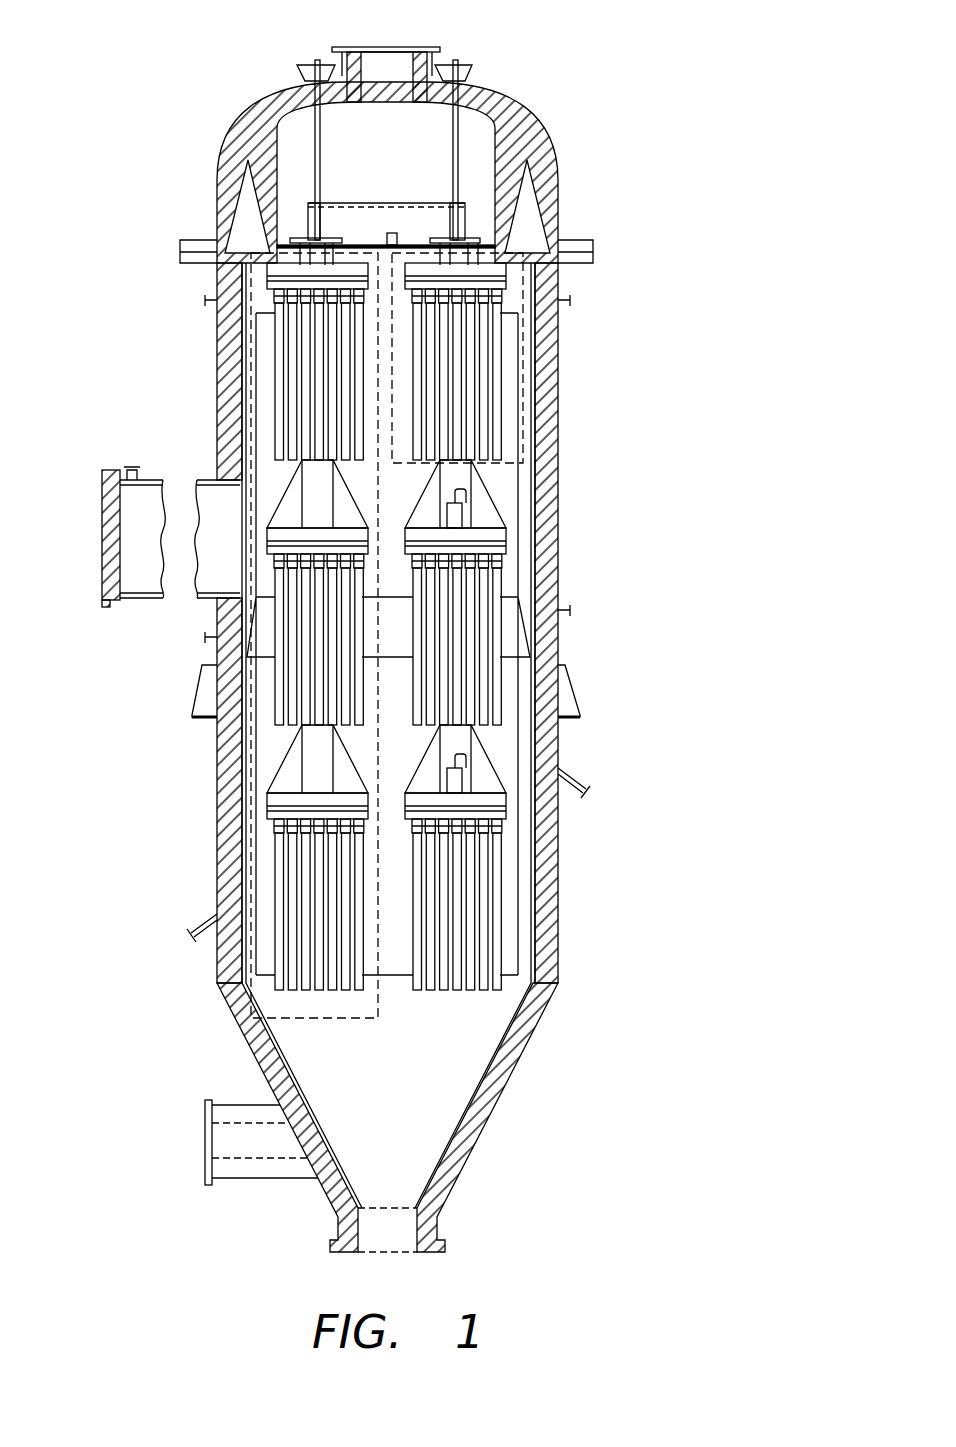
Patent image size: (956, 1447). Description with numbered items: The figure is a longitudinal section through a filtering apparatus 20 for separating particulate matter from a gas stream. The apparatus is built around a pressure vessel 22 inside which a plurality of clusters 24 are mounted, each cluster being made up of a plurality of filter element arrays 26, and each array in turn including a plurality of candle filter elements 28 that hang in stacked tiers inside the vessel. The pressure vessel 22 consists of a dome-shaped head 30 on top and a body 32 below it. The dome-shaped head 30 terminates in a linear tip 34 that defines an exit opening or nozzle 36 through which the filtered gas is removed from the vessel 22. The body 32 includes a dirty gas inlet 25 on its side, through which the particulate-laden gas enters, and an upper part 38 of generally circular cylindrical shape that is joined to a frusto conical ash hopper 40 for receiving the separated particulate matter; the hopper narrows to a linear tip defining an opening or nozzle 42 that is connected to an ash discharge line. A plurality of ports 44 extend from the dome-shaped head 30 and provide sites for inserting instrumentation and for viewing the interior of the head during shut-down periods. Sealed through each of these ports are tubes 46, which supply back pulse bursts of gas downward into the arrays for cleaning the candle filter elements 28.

The filtering apparatus 20 is at (393, 642).
The pressure vessel 22 is at (560, 567).
The clusters 24 is at (250, 385).
The dirty gas inlet 25 is at (105, 518).
The filter element arrays 26 is at (291, 345).
The candle filter elements 28 is at (282, 445).
The dome-shaped head 30 is at (548, 134).
The body 32 is at (660, 893).
The linear tip 34 is at (434, 55).
The exit opening or nozzle 36 is at (383, 68).
The upper part 38 is at (560, 508).
The frusto conical ash hopper 40 is at (492, 1115).
The opening or nozzle 42 is at (394, 1230).
The ports 44 is at (303, 78).
The tubes 46 is at (315, 62).